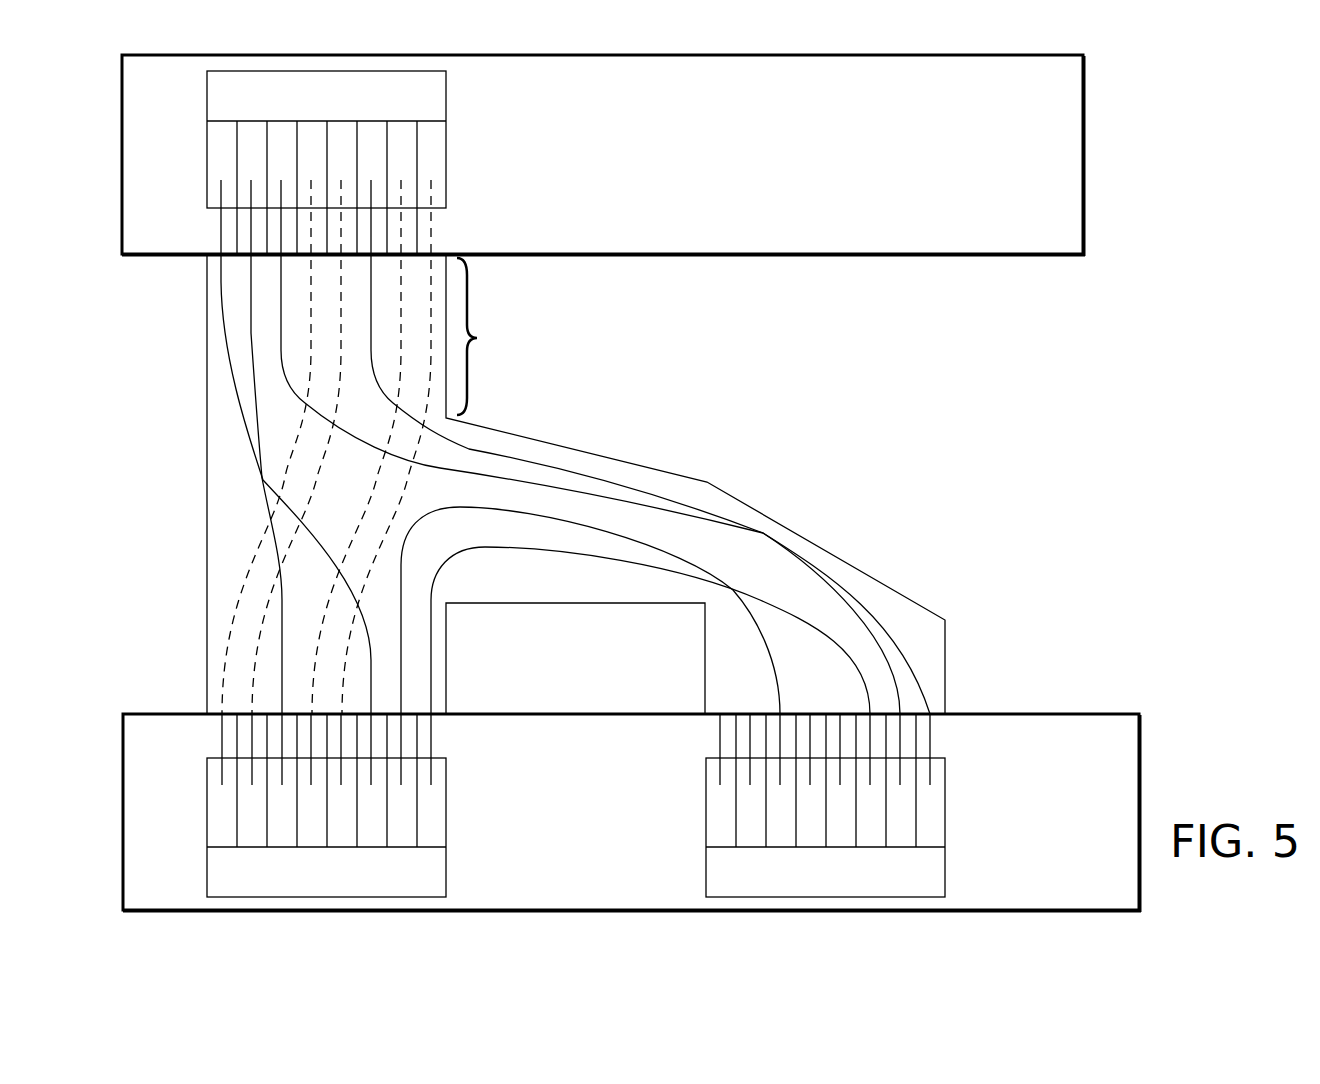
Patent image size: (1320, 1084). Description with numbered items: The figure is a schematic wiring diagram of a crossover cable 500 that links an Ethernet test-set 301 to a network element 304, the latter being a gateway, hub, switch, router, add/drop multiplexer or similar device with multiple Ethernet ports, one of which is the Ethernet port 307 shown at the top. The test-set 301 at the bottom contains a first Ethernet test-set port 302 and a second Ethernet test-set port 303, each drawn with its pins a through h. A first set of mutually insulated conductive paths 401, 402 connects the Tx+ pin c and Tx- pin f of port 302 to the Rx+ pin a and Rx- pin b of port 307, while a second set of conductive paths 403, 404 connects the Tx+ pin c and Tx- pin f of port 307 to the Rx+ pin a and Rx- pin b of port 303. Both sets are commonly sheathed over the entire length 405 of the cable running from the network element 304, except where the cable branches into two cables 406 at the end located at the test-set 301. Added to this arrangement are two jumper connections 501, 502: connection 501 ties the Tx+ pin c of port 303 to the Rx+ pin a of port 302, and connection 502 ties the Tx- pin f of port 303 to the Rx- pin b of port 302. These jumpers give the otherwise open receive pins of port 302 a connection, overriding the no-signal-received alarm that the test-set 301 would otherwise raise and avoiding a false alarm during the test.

The Ethernet test-set 301 is at (1006, 714).
The first Ethernet test-set port 302 is at (448, 870).
The second Ethernet test-set port 303 is at (704, 870).
The network element 304 is at (845, 255).
The Ethernet port 307 is at (448, 100).
The conductive path 401 is at (221, 298).
The conductive path 402 is at (252, 340).
The conductive path 403 is at (290, 388).
The conductive path 404 is at (469, 449).
The length of the cable 405 is at (492, 336).
The two cables 406 is at (706, 647).
The cable 500 is at (1016, 465).
The connection 501 is at (432, 694).
The connection 502 is at (401, 668).